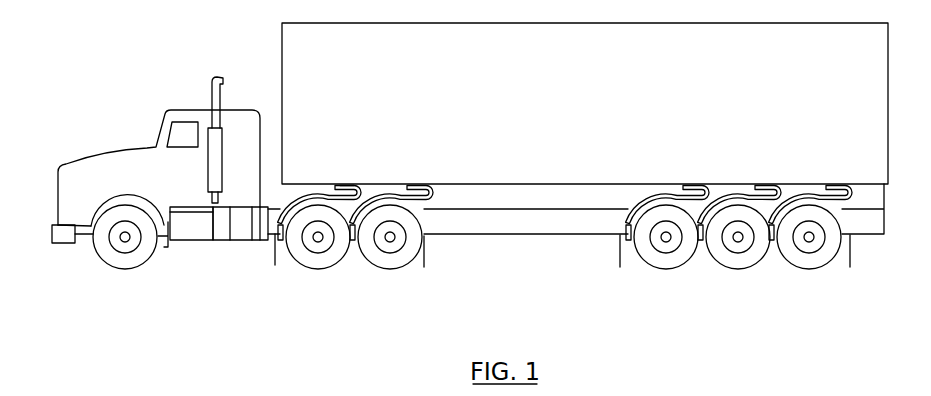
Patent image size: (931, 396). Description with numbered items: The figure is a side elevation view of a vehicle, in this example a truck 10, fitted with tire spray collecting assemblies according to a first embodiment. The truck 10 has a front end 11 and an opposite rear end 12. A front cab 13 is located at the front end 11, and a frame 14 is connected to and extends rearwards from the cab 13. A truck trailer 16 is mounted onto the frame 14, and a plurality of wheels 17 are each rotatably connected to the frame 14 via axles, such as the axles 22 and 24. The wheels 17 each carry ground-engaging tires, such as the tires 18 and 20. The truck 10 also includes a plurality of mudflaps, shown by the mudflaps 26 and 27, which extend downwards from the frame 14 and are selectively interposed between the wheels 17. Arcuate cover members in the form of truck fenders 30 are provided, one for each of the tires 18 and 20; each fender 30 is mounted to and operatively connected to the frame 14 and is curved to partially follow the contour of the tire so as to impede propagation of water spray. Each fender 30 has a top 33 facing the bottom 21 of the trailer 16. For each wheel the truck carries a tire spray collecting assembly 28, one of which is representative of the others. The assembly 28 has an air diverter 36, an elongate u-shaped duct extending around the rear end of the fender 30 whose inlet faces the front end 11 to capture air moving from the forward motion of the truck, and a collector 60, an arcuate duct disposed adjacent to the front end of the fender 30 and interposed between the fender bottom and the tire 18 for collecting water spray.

The truck 10 is at (107, 88).
The front end 11 is at (55, 199).
The rear end 12 is at (602, 146).
The front cab 13 is at (185, 115).
The frame 14 is at (272, 249).
The truck trailer 16 is at (878, 73).
The wheels 17 is at (361, 269).
The tire 18 is at (308, 251).
The tire 20 is at (406, 255).
The bottom of trailer 21 is at (472, 186).
The axle 22 is at (318, 238).
The axle 24 is at (390, 240).
The mudflap 26 is at (275, 258).
The mudflap 27 is at (427, 257).
The tire spray collecting assembly 28 is at (367, 176).
The truck fender 30 is at (315, 218).
The top of fender 33 is at (309, 194).
The air diverter 36 is at (354, 185).
The collector 60 is at (294, 222).